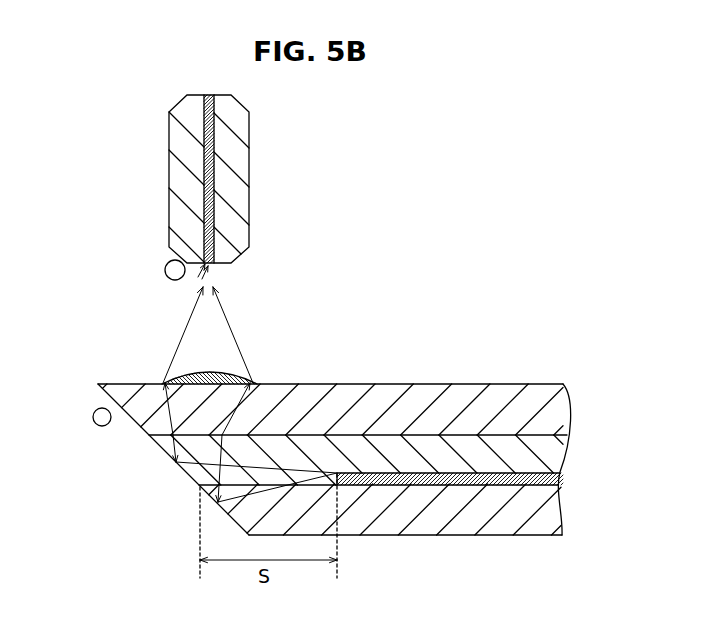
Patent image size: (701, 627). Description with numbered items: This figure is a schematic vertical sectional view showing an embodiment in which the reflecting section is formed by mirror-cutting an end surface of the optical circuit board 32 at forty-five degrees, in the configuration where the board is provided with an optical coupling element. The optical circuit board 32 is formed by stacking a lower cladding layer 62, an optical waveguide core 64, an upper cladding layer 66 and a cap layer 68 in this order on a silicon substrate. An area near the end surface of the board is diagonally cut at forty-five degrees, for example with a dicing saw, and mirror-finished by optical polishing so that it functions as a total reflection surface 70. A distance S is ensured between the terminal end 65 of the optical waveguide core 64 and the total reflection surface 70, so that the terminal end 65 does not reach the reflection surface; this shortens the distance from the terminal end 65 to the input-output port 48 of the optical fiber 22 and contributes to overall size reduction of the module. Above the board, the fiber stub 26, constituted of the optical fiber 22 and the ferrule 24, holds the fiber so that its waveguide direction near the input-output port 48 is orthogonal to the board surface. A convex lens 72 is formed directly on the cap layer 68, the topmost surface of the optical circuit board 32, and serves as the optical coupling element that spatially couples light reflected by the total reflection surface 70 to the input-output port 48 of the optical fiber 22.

The optical fiber 22 is at (215, 122).
The ferrule 24 is at (235, 150).
The fiber stub 26 is at (317, 95).
The input-output port of the optical fiber 48 is at (202, 280).
The convex lens 72 is at (200, 373).
The total reflection surface 70 is at (131, 420).
The terminal end of the optical waveguide core 65 is at (337, 470).
The cap layer 68 is at (555, 410).
The upper cladding layer 66 is at (553, 452).
The optical waveguide core 64 is at (558, 478).
The lower cladding layer 62 is at (550, 515).
The optical circuit board 32 is at (617, 400).